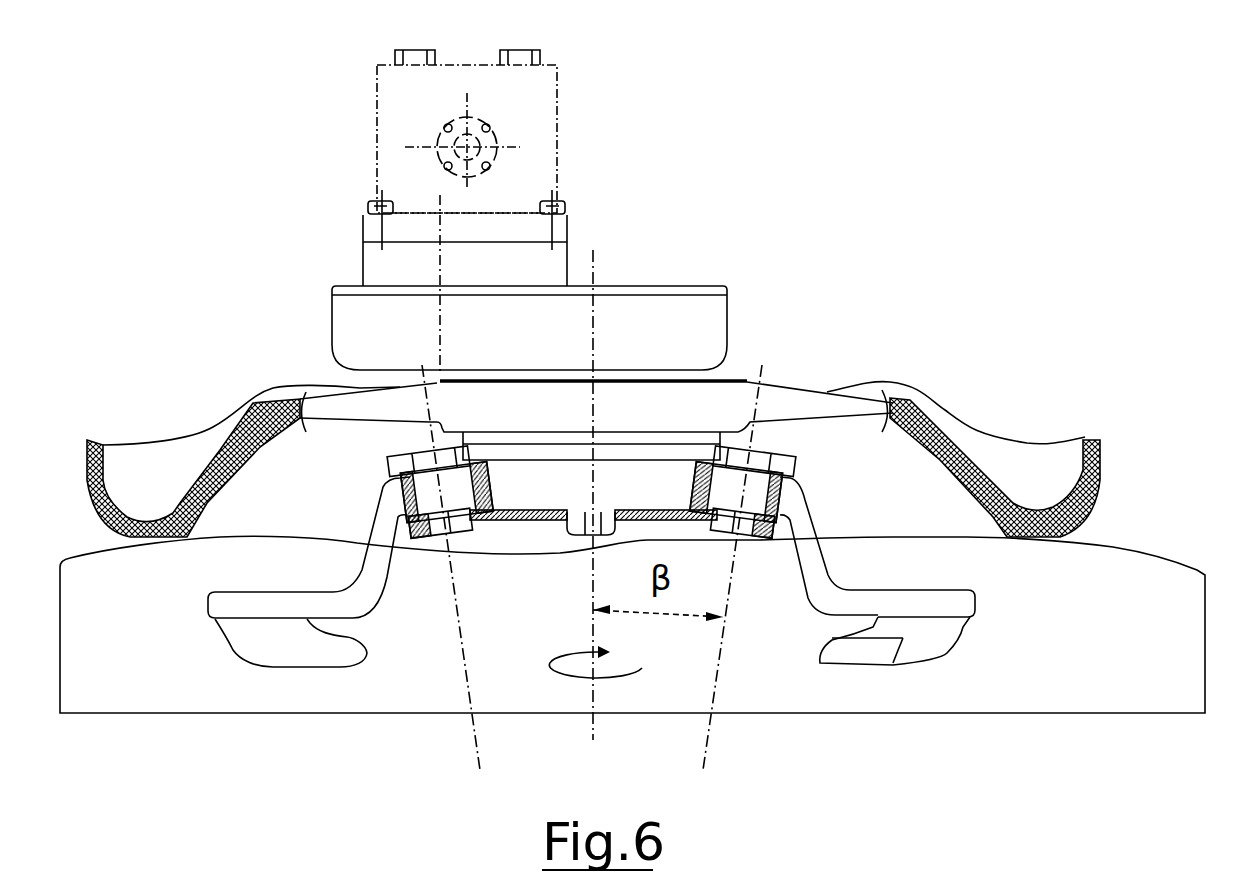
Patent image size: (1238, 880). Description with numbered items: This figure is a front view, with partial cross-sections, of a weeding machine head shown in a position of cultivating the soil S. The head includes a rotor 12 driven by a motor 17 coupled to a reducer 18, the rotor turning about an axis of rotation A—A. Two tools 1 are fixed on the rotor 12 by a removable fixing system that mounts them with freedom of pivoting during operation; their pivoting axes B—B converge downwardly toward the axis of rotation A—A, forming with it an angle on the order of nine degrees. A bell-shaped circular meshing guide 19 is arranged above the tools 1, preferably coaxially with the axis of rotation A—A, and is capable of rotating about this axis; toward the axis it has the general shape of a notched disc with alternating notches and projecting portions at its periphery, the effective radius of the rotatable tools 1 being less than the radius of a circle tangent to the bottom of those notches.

The tools 1 is at (275, 652).
The rotor 12 is at (540, 493).
The motor 17 is at (537, 113).
The reducer 18 is at (353, 323).
The meshing guide 19 is at (128, 457).
The soil S is at (1098, 672).
The axis of rotation A is at (595, 497).
The pivoting axes B is at (596, 568).